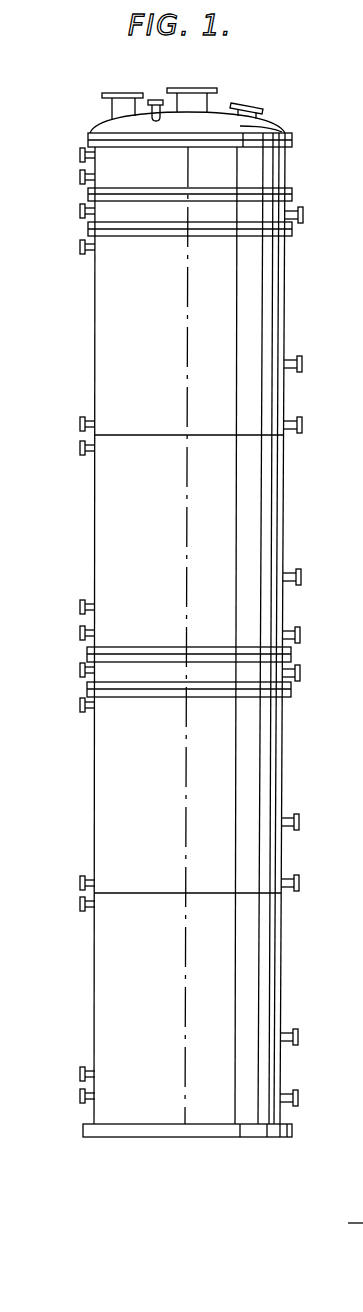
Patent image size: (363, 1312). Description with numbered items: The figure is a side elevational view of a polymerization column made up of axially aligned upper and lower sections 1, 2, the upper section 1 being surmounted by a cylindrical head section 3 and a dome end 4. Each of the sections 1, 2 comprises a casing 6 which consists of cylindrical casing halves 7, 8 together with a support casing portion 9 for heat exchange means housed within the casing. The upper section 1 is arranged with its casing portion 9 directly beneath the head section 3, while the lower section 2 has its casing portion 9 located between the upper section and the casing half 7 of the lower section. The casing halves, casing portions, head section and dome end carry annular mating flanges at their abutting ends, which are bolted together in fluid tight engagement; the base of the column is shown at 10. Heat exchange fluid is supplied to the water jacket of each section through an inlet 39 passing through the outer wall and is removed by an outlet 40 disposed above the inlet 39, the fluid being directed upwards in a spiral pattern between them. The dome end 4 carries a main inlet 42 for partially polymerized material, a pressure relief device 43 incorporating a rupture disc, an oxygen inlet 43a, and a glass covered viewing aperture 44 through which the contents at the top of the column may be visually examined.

The upper section 1 is at (306, 390).
The lower section 2 is at (316, 888).
The cylindrical head section 3 is at (291, 179).
The dome end 4 is at (281, 122).
The casing 6 is at (286, 443).
The cylindrical casing half 7 is at (287, 295).
The cylindrical casing half 8 is at (284, 598).
The support casing portion 9 is at (95, 217).
The bottom flange 10 is at (94, 1115).
The inlet 39 is at (92, 415).
The outlet 40 is at (90, 253).
The main inlet 42 is at (201, 88).
The pressure relief device 43 is at (155, 100).
The oxygen inlet 43a is at (115, 93).
The glass covered viewing aperture 44 is at (253, 103).